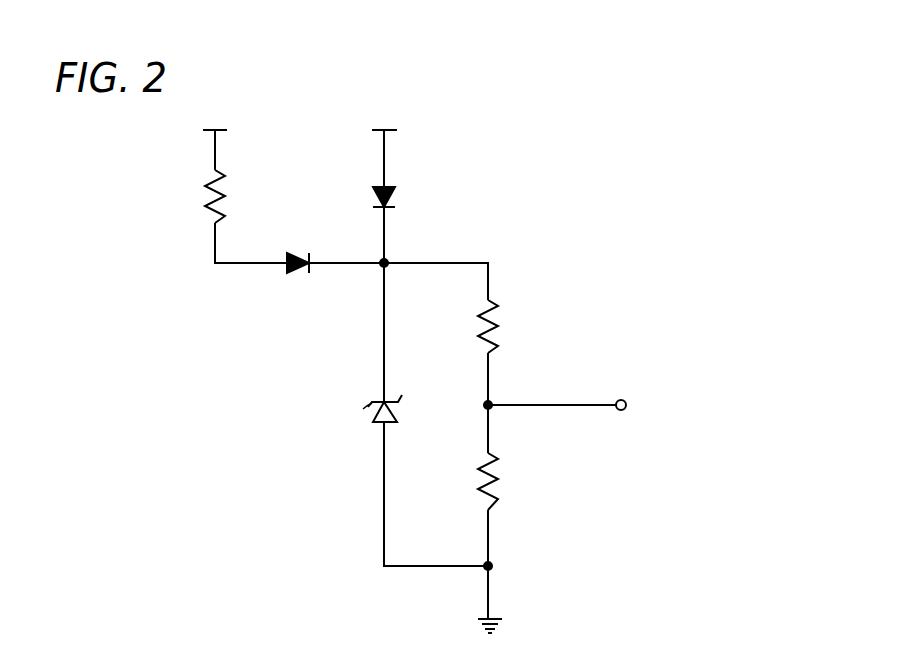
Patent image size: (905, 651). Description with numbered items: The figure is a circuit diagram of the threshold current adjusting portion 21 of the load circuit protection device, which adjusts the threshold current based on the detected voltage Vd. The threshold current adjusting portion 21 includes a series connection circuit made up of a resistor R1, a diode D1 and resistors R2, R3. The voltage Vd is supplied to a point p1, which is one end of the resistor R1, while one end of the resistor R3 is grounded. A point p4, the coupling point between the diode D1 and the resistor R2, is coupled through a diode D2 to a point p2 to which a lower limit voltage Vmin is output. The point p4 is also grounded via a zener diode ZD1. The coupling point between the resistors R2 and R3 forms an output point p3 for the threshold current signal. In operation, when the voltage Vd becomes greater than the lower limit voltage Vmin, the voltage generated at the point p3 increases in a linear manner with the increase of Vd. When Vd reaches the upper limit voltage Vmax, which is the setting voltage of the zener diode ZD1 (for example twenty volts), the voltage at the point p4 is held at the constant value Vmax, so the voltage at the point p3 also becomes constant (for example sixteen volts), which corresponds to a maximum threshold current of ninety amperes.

The threshold current adjusting portion 21 is at (552, 192).
The point p1 is at (227, 130).
The point p2 is at (397, 130).
The output point p3 is at (623, 399).
The point p4 is at (380, 266).
The resistor R1 is at (232, 196).
The resistor R2 is at (504, 326).
The resistor R3 is at (504, 481).
The diode D1 is at (299, 248).
The diode D2 is at (402, 197).
The zener diode ZD1 is at (404, 398).